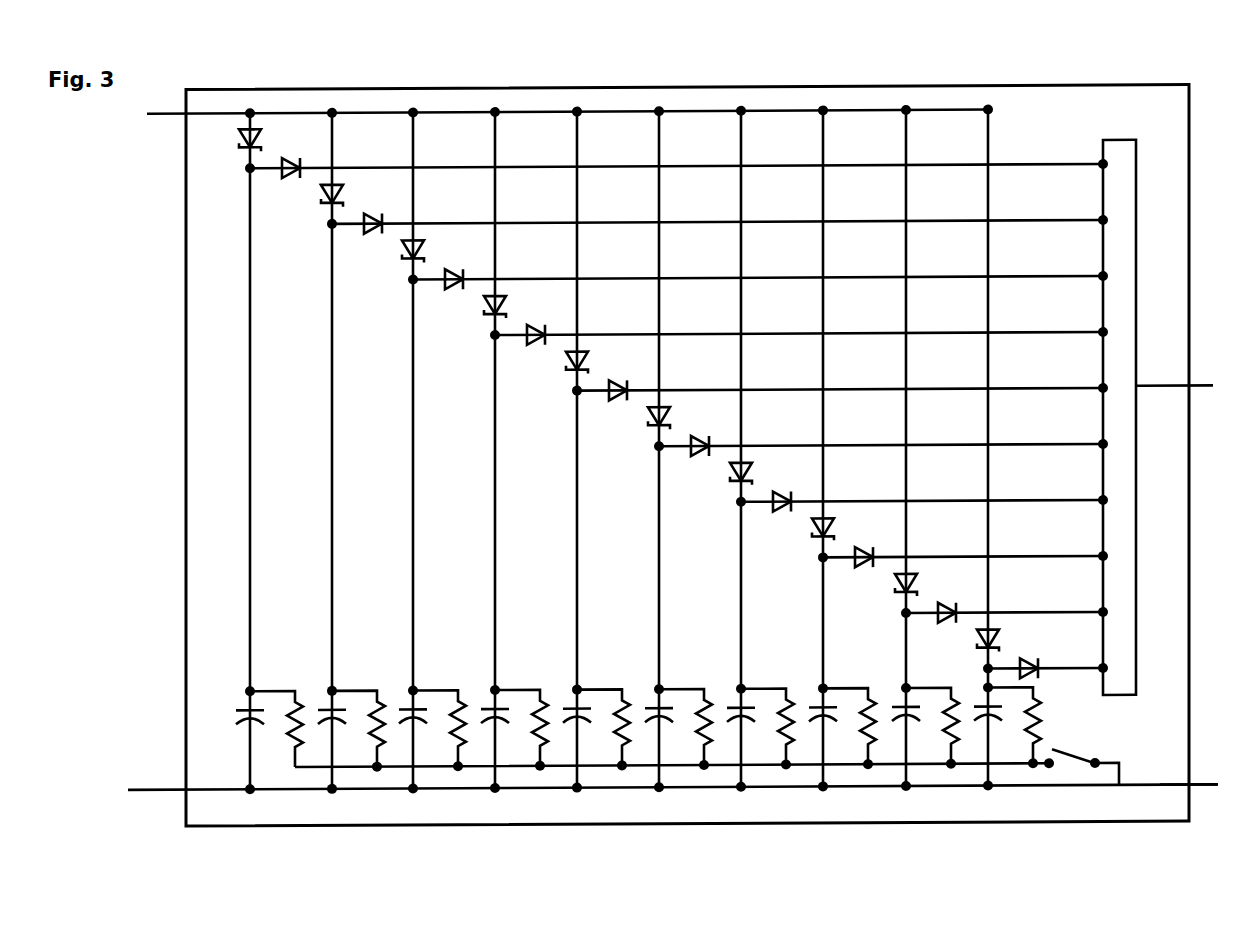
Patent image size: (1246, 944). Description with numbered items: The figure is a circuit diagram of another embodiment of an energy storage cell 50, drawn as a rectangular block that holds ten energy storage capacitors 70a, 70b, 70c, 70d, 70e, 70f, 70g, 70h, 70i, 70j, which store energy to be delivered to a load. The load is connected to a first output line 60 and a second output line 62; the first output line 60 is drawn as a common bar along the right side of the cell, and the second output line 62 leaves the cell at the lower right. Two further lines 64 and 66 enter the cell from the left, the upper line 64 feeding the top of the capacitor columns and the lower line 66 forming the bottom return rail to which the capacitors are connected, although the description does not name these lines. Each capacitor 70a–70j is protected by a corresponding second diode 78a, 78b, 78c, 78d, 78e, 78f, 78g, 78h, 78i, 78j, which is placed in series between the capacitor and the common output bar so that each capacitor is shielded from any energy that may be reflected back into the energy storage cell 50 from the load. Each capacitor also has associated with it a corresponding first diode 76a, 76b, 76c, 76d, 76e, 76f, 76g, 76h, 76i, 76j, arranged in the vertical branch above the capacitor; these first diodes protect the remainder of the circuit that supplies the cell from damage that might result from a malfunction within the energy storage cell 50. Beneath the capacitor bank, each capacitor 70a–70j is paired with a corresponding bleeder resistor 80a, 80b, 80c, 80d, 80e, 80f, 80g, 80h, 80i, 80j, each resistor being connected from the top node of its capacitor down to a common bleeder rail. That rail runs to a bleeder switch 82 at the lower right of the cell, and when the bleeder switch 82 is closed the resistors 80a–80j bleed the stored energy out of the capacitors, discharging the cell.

The energy storage cell 50 is at (644, 87).
The first output line 60 is at (1205, 389).
The second output line 62 is at (1205, 785).
The supply line 64 is at (161, 114).
The ground line 66 is at (152, 789).
The energy storage capacitor 70a is at (247, 706).
The energy storage capacitor 70b is at (329, 706).
The energy storage capacitor 70c is at (410, 706).
The energy storage capacitor 70d is at (492, 706).
The energy storage capacitor 70e is at (574, 706).
The energy storage capacitor 70f is at (656, 706).
The energy storage capacitor 70g is at (738, 706).
The energy storage capacitor 70h is at (820, 706).
The energy storage capacitor 70i is at (903, 706).
The energy storage capacitor 70j is at (985, 706).
The first diode 76a is at (246, 150).
The first diode 76b is at (326, 206).
The first diode 76c is at (407, 262).
The first diode 76d is at (489, 318).
The first diode 76e is at (571, 374).
The first diode 76f is at (653, 430).
The first diode 76g is at (735, 486).
The first diode 76h is at (817, 542).
The first diode 76i is at (900, 598).
The first diode 76j is at (980, 642).
The second diode 78a is at (316, 132).
The second diode 78b is at (398, 188).
The second diode 78c is at (479, 244).
The second diode 78d is at (561, 300).
The second diode 78e is at (643, 356).
The second diode 78f is at (725, 412).
The second diode 78g is at (807, 468).
The second diode 78h is at (889, 524).
The second diode 78i is at (972, 580).
The second diode 78j is at (1029, 659).
The bleeder resistor 80a is at (295, 757).
The bleeder resistor 80b is at (377, 757).
The bleeder resistor 80c is at (458, 757).
The bleeder resistor 80d is at (540, 757).
The bleeder resistor 80e is at (622, 757).
The bleeder resistor 80f is at (704, 757).
The bleeder resistor 80g is at (786, 757).
The bleeder resistor 80h is at (868, 757).
The bleeder resistor 80i is at (951, 757).
The bleeder resistor 80j is at (1033, 757).
The bleeder switch 82 is at (1070, 758).